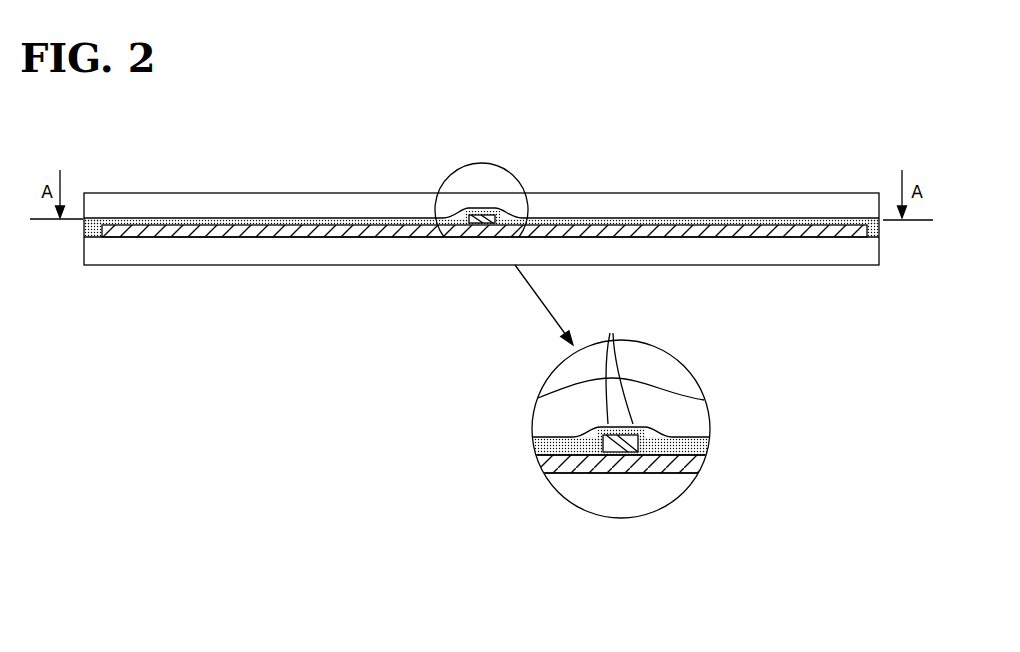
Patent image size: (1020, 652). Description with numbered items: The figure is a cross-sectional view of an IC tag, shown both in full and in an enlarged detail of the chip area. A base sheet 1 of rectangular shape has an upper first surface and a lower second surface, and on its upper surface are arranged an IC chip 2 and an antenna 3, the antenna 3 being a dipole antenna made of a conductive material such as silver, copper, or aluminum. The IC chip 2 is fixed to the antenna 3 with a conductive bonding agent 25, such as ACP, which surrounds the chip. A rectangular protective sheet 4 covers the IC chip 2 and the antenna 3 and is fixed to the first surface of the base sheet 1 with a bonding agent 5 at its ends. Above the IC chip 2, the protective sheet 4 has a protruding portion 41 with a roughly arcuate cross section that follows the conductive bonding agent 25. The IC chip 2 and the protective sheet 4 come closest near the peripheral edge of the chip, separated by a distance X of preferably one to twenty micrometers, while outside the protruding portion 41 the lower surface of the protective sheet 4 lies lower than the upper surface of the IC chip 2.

The base sheet 1 is at (858, 257).
The IC chip 2 is at (486, 208).
The antenna 3 is at (332, 222).
The protective sheet 4 is at (738, 202).
The bonding agent 5 is at (83, 226).
The conductive bonding agent 25 is at (463, 222).
The protruding portion 41 is at (477, 190).
The distance X is at (619, 367).